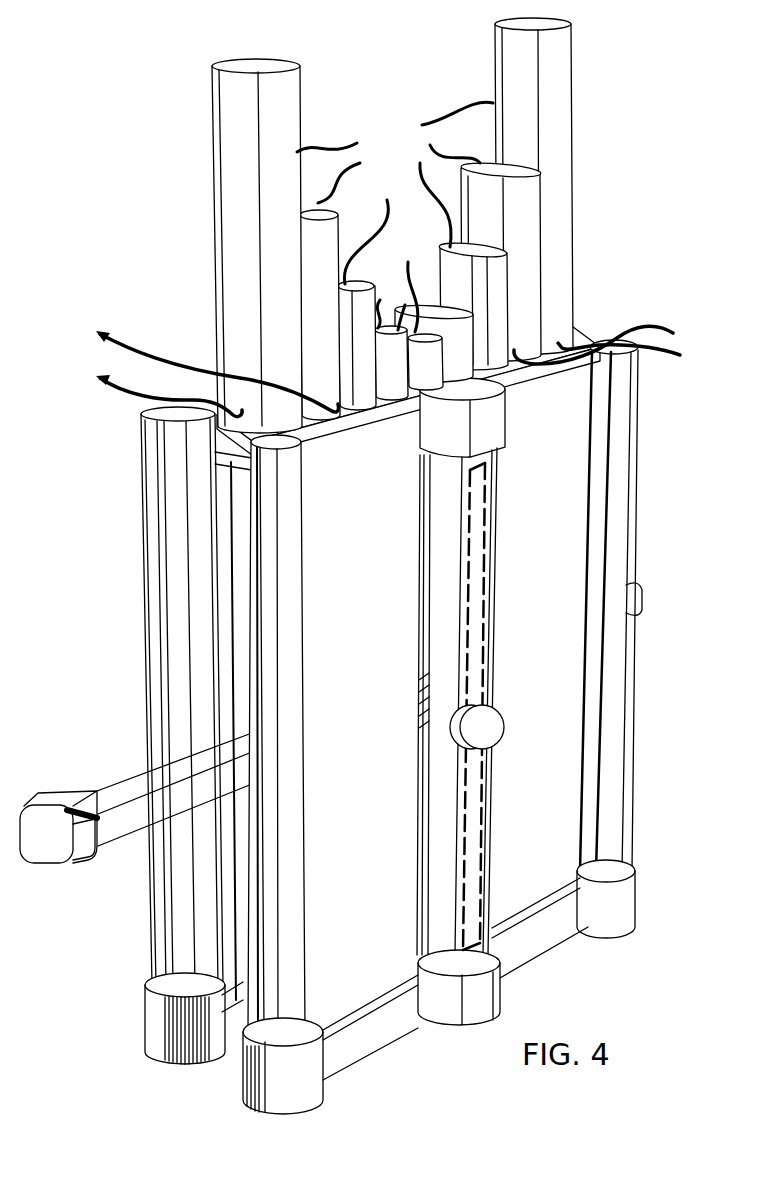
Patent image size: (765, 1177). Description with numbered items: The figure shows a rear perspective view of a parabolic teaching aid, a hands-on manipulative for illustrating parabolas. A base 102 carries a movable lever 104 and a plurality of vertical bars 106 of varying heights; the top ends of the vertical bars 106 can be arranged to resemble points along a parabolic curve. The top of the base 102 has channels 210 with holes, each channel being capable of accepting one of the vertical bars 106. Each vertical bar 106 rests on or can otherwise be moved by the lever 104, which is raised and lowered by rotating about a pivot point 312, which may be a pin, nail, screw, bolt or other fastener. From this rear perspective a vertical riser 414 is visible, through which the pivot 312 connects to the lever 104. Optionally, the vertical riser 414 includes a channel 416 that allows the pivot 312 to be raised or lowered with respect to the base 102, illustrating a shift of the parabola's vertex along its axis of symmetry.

The base 102 is at (230, 1055).
The movable lever 104 is at (116, 786).
The vertical bars 106 is at (392, 225).
The channels 210 is at (393, 371).
The pivot point 312 is at (488, 727).
The vertical riser 414 is at (447, 638).
The channel 416 is at (483, 527).